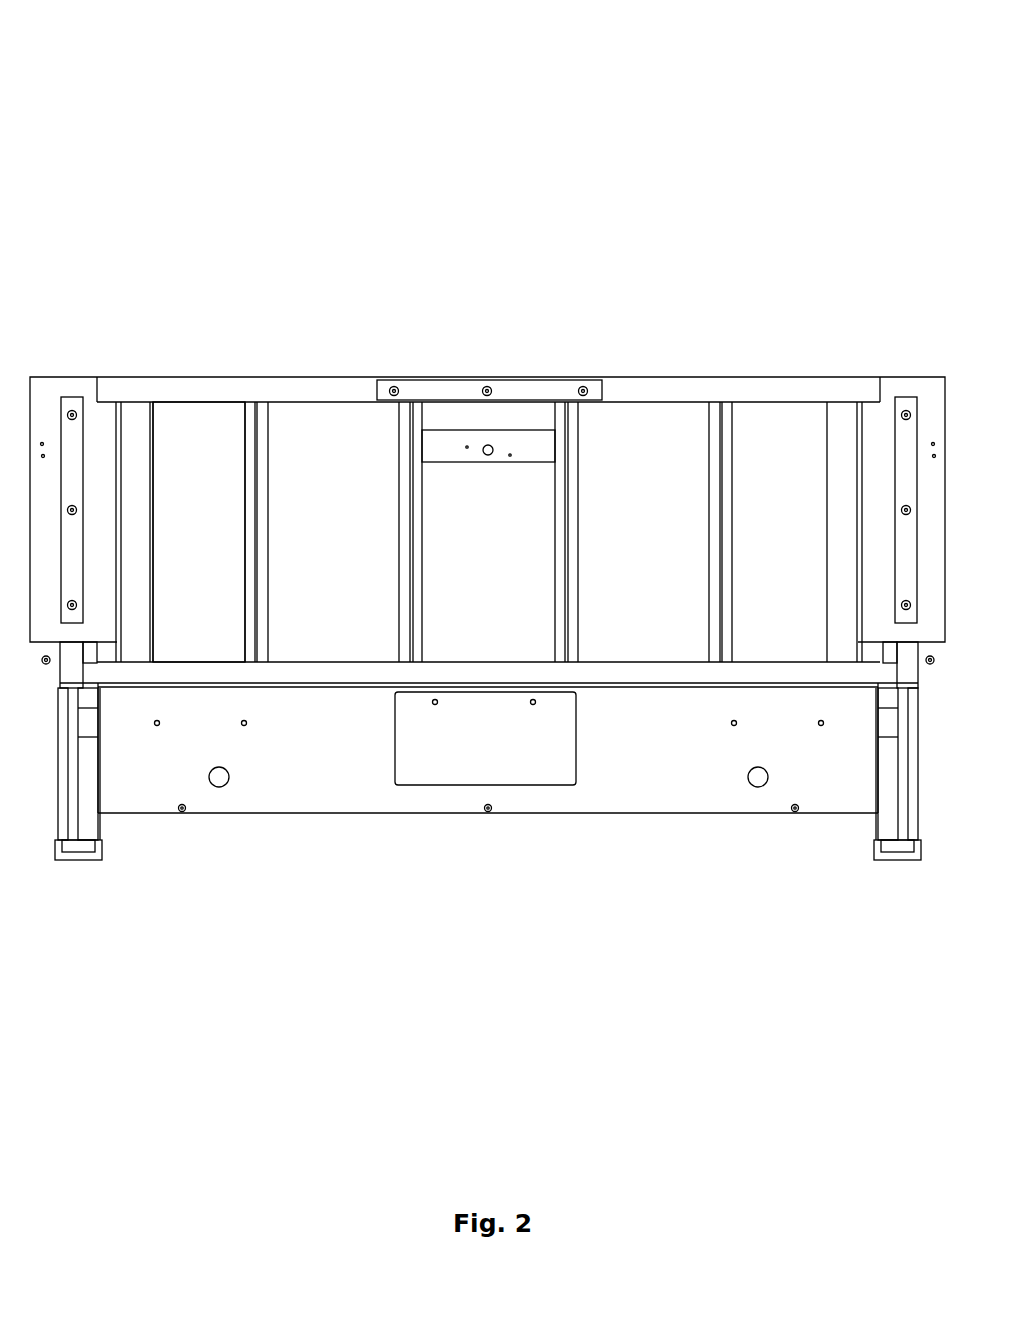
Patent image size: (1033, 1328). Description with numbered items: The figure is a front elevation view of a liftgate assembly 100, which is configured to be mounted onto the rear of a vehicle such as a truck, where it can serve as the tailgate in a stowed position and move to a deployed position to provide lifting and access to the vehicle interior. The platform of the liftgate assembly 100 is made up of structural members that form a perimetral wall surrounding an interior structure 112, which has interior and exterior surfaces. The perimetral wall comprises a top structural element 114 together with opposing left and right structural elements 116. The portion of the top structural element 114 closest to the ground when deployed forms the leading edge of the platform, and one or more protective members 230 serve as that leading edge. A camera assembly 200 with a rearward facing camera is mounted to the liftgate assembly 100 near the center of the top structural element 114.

The liftgate assembly 100 is at (197, 55).
The interior structure 112 is at (174, 442).
The top structural element 114 is at (673, 393).
The left and right structural elements 116 is at (38, 397).
The camera assembly 200 is at (490, 418).
The protective member 230 is at (73, 398).